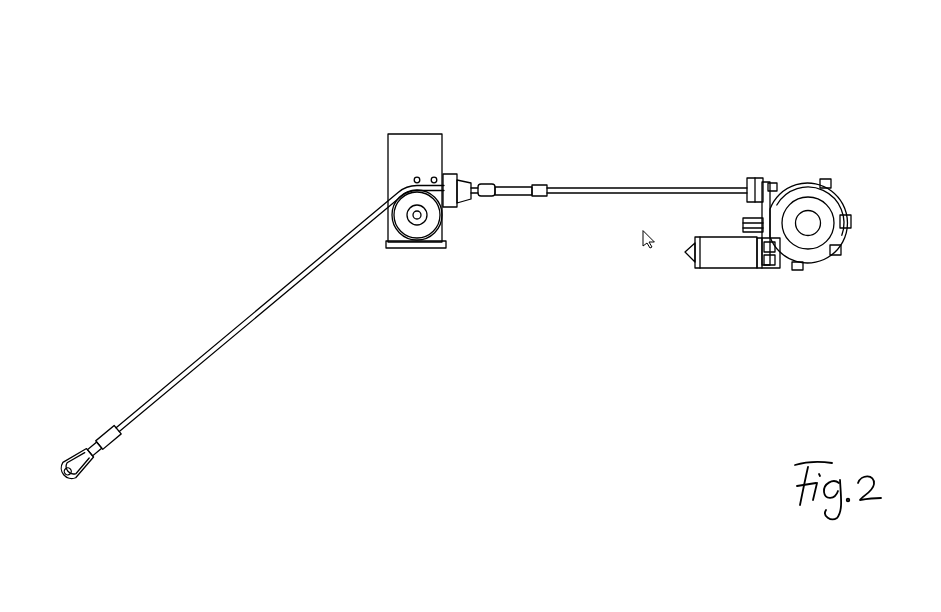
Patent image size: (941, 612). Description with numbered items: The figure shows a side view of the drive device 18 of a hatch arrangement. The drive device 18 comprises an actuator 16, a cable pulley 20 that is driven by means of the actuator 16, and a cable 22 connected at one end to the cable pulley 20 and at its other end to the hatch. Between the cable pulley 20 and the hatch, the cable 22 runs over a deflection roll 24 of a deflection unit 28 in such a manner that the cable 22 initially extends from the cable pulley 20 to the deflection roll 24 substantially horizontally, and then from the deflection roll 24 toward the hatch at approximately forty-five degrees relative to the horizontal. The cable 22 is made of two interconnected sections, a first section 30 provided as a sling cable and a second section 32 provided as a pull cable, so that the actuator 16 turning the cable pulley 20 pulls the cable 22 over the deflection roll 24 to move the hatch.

The actuator 16 is at (748, 270).
The drive device 18 is at (670, 143).
The cable pulley 20 is at (830, 190).
The cable 22 is at (322, 247).
The deflection roll 24 is at (432, 216).
The deflection unit 28 is at (420, 127).
The first section 30 is at (217, 347).
The second section 32 is at (600, 187).